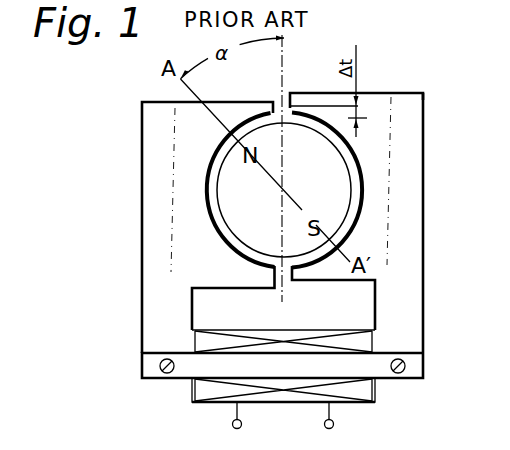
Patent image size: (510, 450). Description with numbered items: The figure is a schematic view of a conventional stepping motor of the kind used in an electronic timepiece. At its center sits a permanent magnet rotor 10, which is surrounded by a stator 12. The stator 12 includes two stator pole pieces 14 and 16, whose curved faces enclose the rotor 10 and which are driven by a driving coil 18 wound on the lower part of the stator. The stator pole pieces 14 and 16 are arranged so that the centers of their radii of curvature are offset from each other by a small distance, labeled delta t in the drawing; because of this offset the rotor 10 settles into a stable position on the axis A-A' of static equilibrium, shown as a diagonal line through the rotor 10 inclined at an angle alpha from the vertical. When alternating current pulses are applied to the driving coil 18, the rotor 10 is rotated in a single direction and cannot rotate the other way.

The permanent magnet rotor 10 is at (335, 185).
The stator 12 is at (423, 108).
The stator pole piece 14 is at (159, 249).
The stator pole piece 16 is at (410, 221).
The driving coil 18 is at (370, 388).